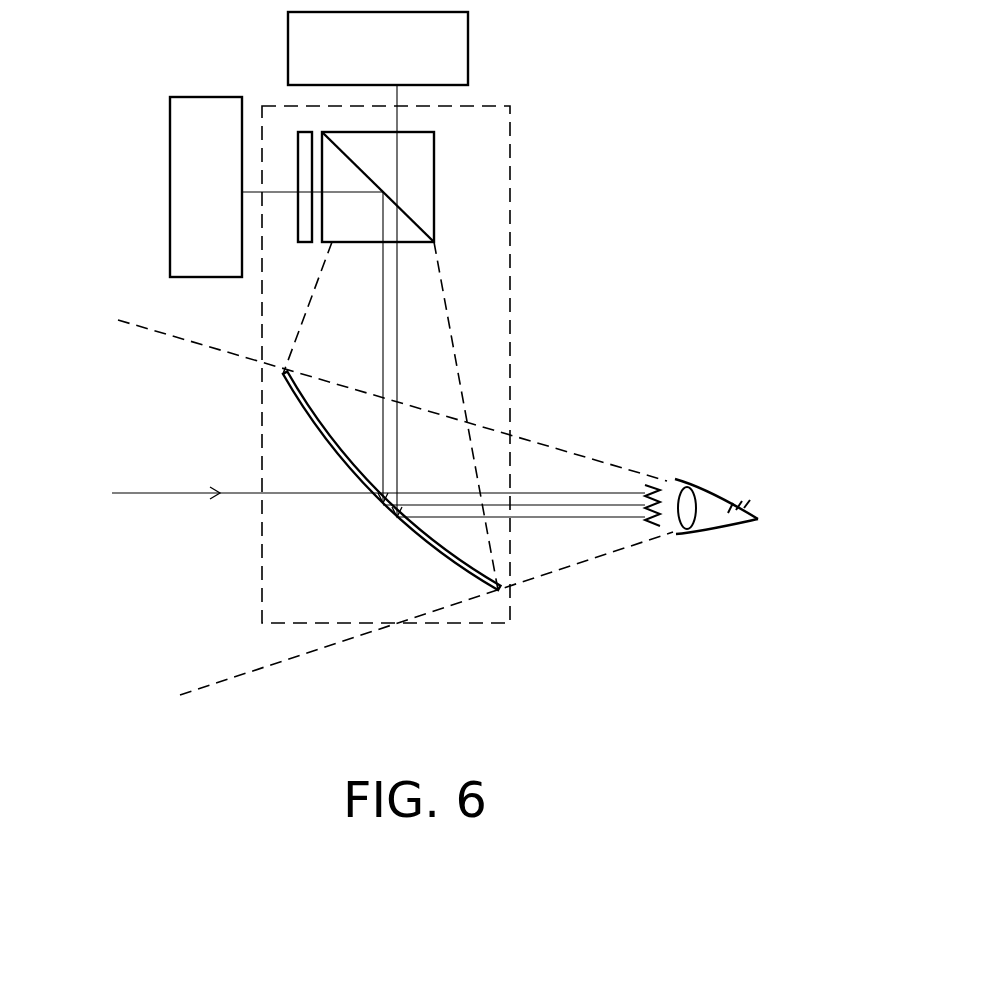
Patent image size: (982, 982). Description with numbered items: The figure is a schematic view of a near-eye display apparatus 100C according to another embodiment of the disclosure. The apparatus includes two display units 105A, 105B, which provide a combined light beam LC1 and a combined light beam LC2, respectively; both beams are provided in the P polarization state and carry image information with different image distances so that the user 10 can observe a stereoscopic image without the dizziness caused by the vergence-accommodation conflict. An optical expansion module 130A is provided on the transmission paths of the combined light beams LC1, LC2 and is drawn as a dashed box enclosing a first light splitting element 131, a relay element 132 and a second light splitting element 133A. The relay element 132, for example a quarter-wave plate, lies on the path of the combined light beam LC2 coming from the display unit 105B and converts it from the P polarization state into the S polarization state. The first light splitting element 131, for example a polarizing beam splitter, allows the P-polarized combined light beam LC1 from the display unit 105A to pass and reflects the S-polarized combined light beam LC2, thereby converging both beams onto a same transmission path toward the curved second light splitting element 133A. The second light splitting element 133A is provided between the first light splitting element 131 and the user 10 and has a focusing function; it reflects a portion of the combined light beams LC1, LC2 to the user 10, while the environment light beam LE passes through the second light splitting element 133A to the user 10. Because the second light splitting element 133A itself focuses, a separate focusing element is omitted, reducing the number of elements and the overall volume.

The near-eye display apparatus 100C is at (775, 737).
The display unit 105A is at (458, 50).
The display unit 105B is at (185, 178).
The optical expansion module 130A is at (513, 313).
The relay element 132 is at (273, 192).
The first light splitting element 131 is at (435, 202).
The second light splitting element 133A is at (458, 572).
The user 10 is at (727, 482).
The combined light beam LC1 is at (397, 115).
The combined light beam LC2 is at (302, 145).
The environment light beam LE is at (378, 475).